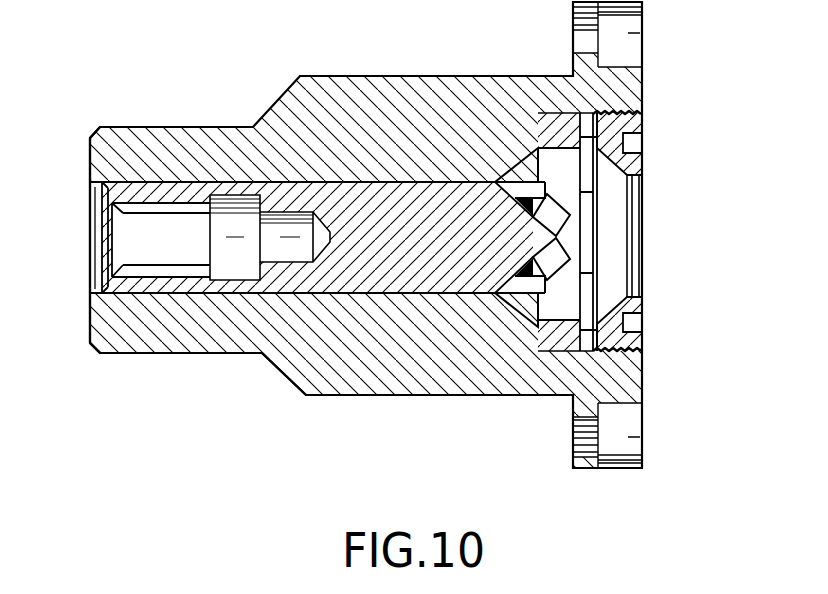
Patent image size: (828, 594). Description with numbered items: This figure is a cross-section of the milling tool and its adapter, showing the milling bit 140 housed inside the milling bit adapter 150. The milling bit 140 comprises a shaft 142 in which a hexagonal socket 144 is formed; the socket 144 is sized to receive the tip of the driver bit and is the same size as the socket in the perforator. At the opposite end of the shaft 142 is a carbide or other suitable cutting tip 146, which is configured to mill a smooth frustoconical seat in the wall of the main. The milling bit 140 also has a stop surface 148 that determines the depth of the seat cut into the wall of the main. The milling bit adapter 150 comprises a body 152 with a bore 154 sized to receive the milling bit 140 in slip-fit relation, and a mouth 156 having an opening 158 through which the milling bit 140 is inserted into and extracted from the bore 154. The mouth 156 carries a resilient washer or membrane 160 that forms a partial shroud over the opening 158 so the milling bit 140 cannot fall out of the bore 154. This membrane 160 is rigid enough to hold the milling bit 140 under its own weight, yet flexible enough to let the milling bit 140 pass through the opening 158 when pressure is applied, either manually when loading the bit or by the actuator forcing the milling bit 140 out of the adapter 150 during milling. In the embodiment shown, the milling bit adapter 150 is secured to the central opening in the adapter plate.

The milling bit 140 is at (299, 292).
The shaft 142 is at (134, 142).
The hexagonal socket 144 is at (172, 206).
The cutting tip 146 is at (566, 204).
The stop surface 148 is at (514, 272).
The milling bit adapter 150 is at (174, 340).
The body 152 is at (393, 57).
The bore 154 is at (232, 176).
The mouth 156 is at (655, 360).
The opening 158 is at (624, 260).
The resilient membrane 160 is at (632, 245).